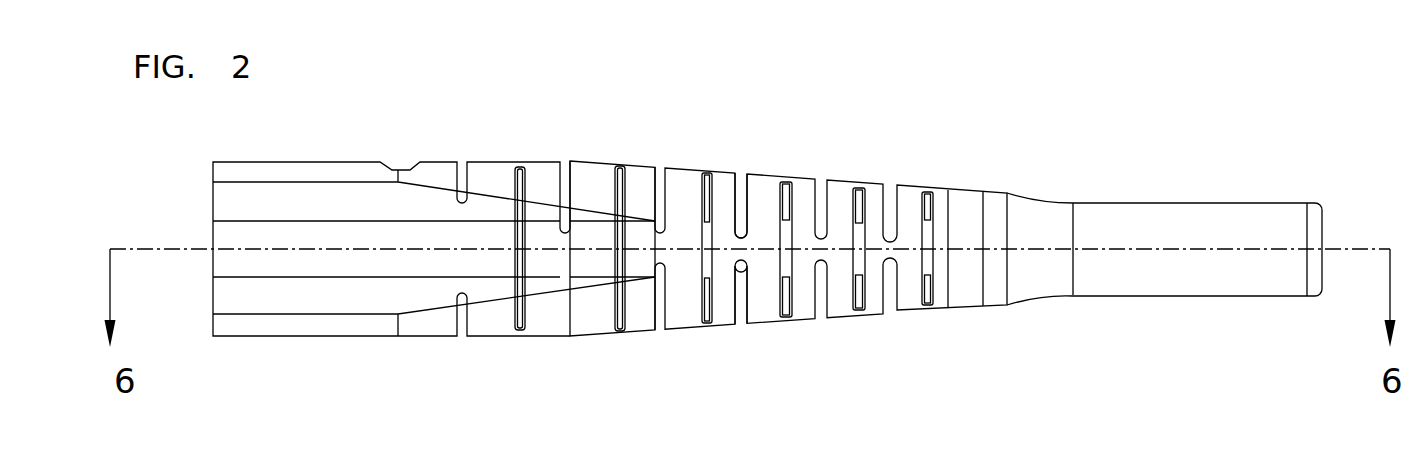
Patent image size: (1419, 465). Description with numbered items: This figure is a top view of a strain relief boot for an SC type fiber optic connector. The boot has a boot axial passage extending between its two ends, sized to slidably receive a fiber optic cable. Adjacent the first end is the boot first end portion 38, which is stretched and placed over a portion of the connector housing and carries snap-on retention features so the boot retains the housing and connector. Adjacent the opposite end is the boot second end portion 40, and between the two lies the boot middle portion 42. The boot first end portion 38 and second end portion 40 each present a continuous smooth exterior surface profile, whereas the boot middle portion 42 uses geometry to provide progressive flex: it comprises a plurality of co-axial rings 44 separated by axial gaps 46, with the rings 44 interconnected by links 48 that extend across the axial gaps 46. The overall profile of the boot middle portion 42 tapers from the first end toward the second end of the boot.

The boot first end portion 38 is at (350, 145).
The boot second end portion 40 is at (1140, 198).
The boot middle portion 42 is at (782, 272).
The co-axial rings 44 is at (708, 328).
The axial gaps 46 is at (742, 327).
The links 48 is at (747, 260).